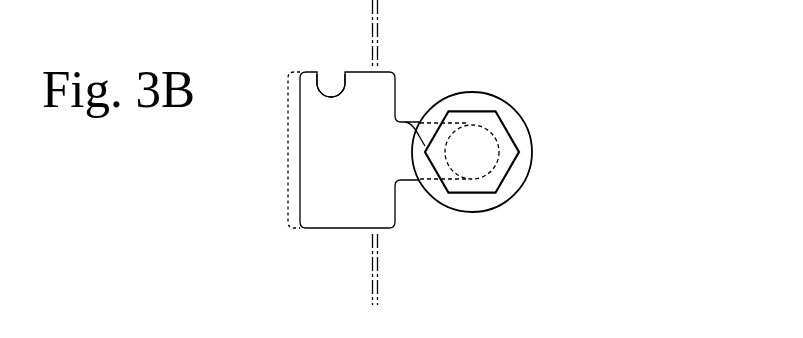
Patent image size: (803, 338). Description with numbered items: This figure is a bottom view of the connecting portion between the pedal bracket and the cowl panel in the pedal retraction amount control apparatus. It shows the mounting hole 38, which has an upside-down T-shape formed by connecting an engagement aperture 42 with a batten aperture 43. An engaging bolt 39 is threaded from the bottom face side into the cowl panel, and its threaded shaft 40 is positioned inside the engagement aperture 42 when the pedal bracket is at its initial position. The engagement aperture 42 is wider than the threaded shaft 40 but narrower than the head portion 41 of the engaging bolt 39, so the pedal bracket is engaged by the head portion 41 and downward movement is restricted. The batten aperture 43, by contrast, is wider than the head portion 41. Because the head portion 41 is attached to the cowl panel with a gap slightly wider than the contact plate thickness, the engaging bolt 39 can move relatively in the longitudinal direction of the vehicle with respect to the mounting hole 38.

The mounting hole 38 is at (348, 205).
The engaging bolt 39 is at (560, 153).
The threaded shaft 40 is at (500, 163).
The head portion 41 is at (511, 135).
The engagement aperture 42 is at (430, 147).
The batten aperture 43 is at (315, 83).